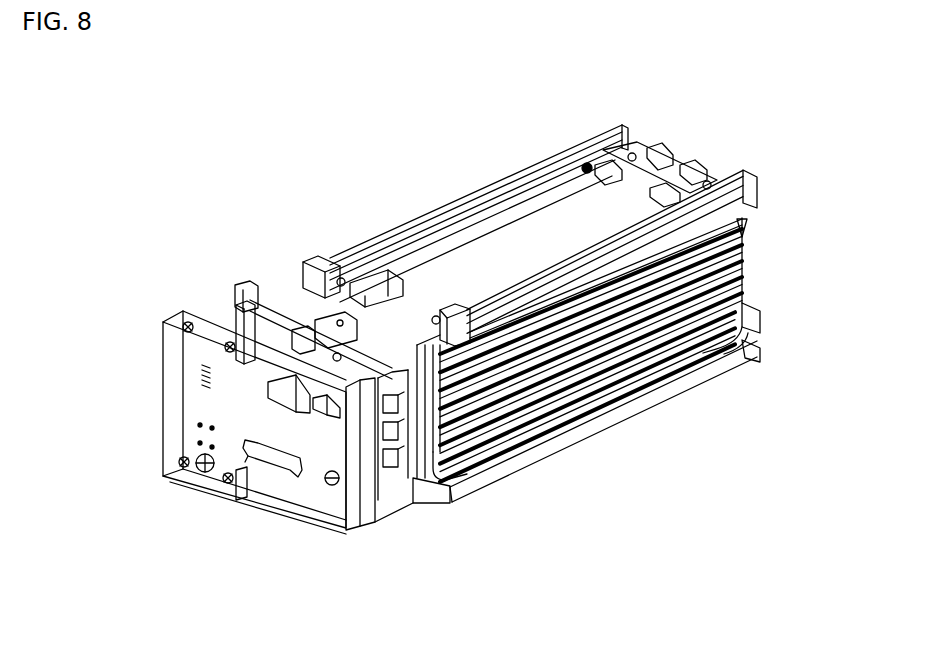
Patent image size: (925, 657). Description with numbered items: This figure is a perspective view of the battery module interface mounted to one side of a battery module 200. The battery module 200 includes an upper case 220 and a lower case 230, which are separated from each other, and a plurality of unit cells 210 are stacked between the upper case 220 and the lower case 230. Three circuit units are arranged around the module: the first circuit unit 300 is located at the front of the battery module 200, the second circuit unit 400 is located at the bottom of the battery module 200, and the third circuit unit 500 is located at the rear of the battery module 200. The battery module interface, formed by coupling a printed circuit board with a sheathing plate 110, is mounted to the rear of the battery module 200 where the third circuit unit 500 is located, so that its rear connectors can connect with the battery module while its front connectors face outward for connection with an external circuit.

The battery module 200 is at (116, 121).
The sheathing plate 110 is at (163, 367).
The third circuit unit 500 is at (398, 508).
The second circuit unit 400 is at (434, 170).
The upper case 220 is at (369, 240).
The first circuit unit 300 is at (770, 240).
The unit cells 210 is at (640, 376).
The lower case 230 is at (578, 451).